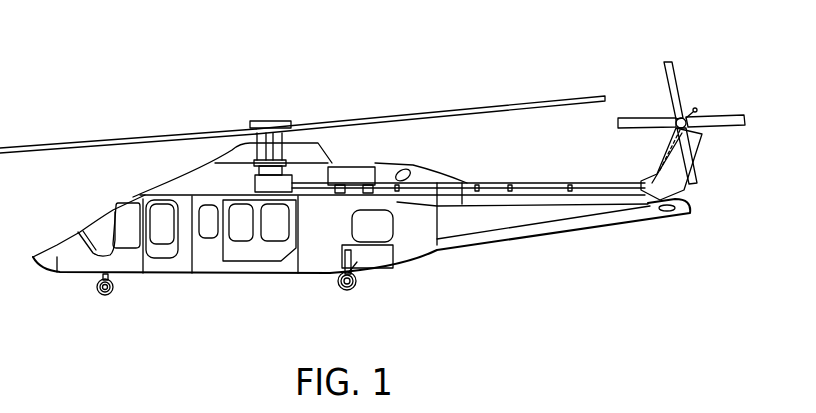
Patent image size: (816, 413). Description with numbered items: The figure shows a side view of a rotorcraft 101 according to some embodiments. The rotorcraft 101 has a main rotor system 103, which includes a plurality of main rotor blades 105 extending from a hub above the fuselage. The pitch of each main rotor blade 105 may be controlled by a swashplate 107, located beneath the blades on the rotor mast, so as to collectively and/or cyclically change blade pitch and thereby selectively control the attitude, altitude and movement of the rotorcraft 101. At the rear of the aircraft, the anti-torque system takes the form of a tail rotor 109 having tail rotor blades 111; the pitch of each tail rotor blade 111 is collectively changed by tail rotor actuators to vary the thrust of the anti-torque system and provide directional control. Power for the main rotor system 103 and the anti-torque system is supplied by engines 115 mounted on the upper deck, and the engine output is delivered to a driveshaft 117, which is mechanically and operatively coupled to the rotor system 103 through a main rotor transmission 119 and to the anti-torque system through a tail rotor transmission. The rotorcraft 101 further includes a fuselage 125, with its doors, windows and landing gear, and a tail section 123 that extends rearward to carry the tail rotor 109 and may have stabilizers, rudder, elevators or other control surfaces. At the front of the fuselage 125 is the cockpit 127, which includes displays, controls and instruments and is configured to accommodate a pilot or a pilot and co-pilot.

The rotorcraft 101 is at (165, 68).
The main rotor system 103 is at (303, 98).
The main rotor blades 105 is at (118, 136).
The swashplate 107 is at (263, 158).
The tail rotor 109 is at (705, 88).
The tail rotor blades 111 is at (727, 128).
The engines 115 is at (352, 173).
The driveshaft 117 is at (310, 190).
The main rotor transmission 119 is at (253, 185).
The tail section 123 is at (560, 235).
The fuselage 125 is at (208, 277).
The cockpit 127 is at (80, 220).